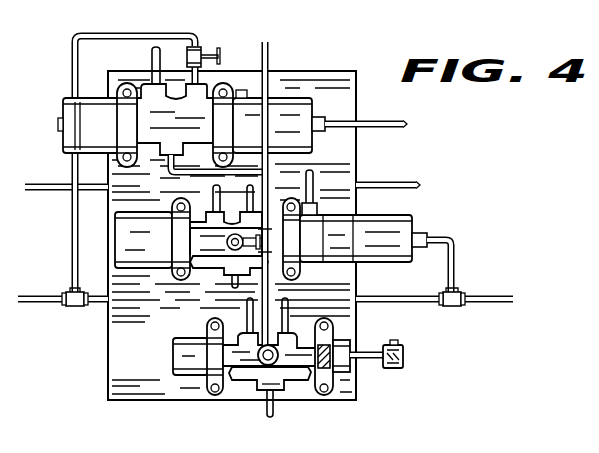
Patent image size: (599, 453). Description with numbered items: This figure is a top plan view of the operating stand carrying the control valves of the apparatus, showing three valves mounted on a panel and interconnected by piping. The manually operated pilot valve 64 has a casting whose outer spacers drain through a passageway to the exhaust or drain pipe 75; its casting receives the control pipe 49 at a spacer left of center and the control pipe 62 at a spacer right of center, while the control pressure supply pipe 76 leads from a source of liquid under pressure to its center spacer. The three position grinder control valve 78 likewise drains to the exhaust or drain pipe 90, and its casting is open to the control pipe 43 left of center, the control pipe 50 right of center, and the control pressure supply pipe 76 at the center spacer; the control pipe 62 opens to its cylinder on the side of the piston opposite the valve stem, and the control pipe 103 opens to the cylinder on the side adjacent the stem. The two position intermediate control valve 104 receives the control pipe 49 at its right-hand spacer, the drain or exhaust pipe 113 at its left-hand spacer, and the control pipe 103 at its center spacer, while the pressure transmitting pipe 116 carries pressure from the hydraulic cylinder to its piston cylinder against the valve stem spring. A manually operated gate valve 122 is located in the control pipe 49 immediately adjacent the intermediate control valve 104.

The control pipe 43 is at (63, 192).
The control pipe 49 is at (72, 50).
The control pipe 50 is at (405, 186).
The control pipe 62 is at (450, 307).
The manually operated pilot valve 64 is at (165, 375).
The exhaust or drain pipe 75 is at (266, 413).
The control pressure supply pipe 76 is at (269, 96).
The three position grinder control valve 78 is at (423, 219).
The exhaust or drain pipe 90 is at (230, 283).
The control pipe 103 is at (309, 180).
The two position intermediate control valve 104 is at (55, 102).
The drain or exhaust pipe 113 is at (152, 57).
The pressure transmitting pipe 116 is at (368, 123).
The manually operated gate valve 122 is at (203, 50).